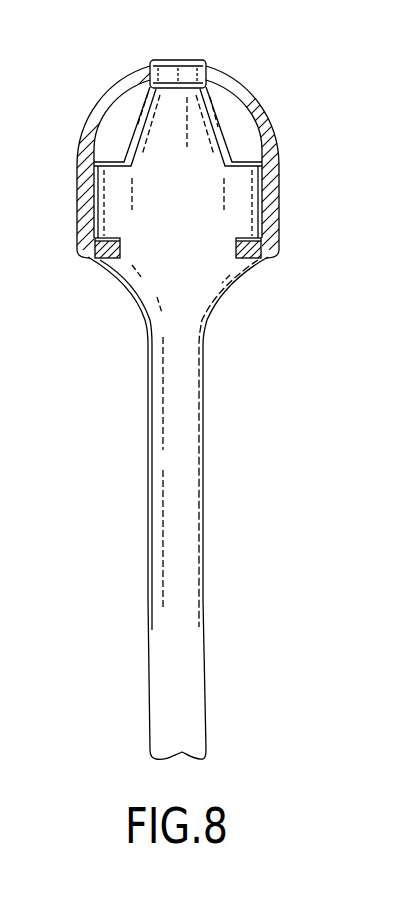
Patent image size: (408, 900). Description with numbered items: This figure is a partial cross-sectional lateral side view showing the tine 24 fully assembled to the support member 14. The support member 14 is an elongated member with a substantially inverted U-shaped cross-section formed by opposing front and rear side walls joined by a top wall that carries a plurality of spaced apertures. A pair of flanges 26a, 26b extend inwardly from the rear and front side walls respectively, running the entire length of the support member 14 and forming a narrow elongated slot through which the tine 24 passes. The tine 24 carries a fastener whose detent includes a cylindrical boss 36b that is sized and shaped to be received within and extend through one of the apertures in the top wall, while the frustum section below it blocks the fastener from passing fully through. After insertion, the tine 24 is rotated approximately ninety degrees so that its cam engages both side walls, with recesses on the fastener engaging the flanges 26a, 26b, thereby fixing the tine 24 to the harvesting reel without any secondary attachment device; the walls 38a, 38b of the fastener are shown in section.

The support member 14 is at (251, 88).
The tine 24 is at (272, 399).
The flange 26a is at (104, 254).
The flange 26b is at (252, 256).
The cylindrical boss 36b is at (184, 58).
The first flap 38a is at (250, 156).
The second flap 38b is at (109, 158).